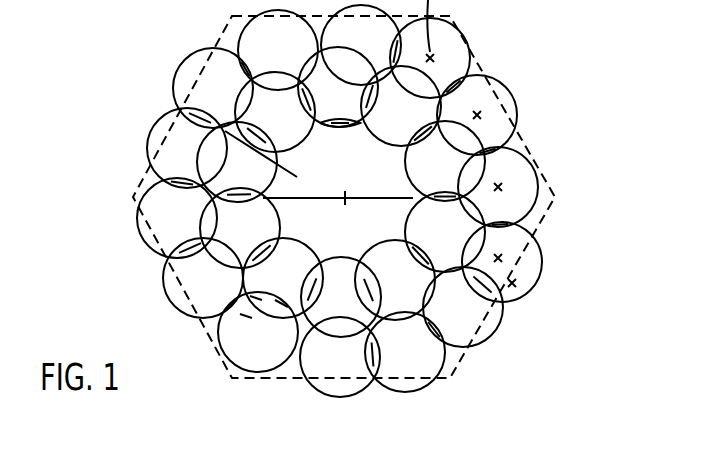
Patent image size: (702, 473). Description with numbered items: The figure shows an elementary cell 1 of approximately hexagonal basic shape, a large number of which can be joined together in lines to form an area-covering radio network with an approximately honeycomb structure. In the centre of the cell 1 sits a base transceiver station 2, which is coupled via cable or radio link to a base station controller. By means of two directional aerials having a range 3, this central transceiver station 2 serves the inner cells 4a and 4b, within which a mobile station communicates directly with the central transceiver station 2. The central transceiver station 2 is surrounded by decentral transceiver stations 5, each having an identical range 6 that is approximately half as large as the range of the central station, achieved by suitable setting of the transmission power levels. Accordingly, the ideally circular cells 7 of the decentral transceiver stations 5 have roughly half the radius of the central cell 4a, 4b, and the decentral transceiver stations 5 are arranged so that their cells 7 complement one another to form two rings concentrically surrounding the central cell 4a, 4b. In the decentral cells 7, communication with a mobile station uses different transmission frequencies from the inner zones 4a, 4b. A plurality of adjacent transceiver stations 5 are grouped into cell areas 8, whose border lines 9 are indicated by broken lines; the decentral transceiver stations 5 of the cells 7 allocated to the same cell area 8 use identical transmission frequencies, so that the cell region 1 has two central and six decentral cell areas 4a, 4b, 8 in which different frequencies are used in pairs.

The elementary cell 1 is at (475, 40).
The base transceiver station 2 is at (345, 193).
The range 3 is at (250, 177).
The inner cell 4a is at (175, 83).
The inner cell 4b is at (331, 248).
The decentral transceiver station 5 is at (482, 120).
The range 6 is at (598, 210).
The decentral cell 7 is at (514, 286).
The cell area 8 is at (455, 325).
The border line 9 is at (212, 318).